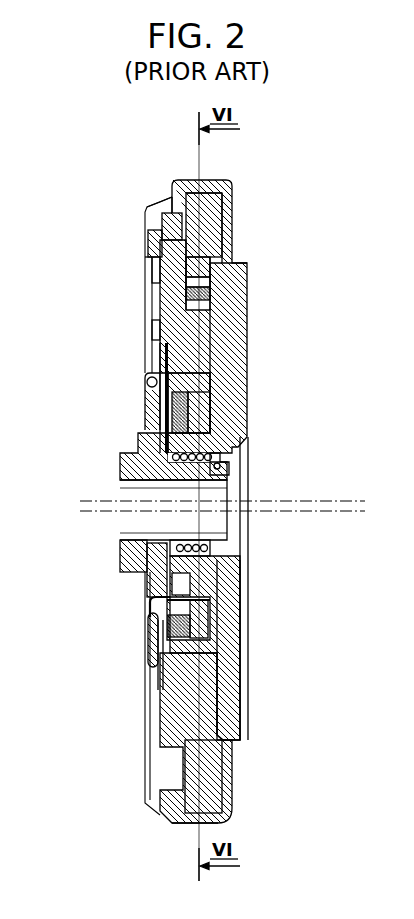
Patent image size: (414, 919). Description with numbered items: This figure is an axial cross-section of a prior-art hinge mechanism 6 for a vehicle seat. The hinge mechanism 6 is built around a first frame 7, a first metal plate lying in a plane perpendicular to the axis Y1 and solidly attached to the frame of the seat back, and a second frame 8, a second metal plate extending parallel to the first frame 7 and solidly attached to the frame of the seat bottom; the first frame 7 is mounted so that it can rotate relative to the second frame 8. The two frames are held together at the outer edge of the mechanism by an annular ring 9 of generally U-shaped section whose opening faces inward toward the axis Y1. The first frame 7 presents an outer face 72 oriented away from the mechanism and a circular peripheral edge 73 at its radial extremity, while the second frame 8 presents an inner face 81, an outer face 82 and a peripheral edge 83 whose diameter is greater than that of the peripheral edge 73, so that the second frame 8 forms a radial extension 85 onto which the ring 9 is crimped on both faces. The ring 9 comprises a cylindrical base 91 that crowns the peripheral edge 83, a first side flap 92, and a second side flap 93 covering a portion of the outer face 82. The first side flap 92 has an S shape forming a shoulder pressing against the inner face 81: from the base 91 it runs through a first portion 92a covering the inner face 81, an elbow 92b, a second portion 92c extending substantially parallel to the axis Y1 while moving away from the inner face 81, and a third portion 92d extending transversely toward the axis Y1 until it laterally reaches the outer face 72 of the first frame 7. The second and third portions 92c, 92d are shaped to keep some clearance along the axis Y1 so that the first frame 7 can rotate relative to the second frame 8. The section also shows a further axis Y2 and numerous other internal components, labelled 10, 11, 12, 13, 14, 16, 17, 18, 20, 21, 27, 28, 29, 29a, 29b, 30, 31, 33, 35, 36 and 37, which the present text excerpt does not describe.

The hinge mechanism 6 is at (305, 259).
The first frame 7 is at (180, 713).
The second frame 8 is at (228, 648).
The ring 9 is at (180, 823).
The gap 10 is at (211, 276).
The hub 11 is at (118, 562).
The flange 12 is at (178, 468).
The bore 13 is at (124, 537).
The bracket 14 is at (150, 405).
The lower bearing balls 16 is at (205, 545).
The body 17 is at (243, 577).
The upper bearing balls 18 is at (210, 459).
The retainer 20 is at (160, 601).
The spacer 21 is at (150, 578).
The base member 27 is at (190, 307).
The washer 28 is at (200, 293).
The damping member 29 is at (195, 380).
The damping member first portion 29a is at (180, 405).
The damping member second portion 29b is at (207, 417).
The spring 30 is at (190, 655).
The plate 31 is at (217, 673).
The seal 33 is at (226, 473).
The cover 35 is at (150, 652).
The bearing 36 is at (182, 603).
The bearing race 37 is at (192, 612).
The outer face 72 is at (150, 290).
The peripheral edge 73 is at (152, 237).
The inner face 81 is at (152, 220).
The outer face 82 is at (219, 260).
The peripheral edge 83 is at (193, 190).
The extension 85 is at (227, 193).
The cylindrical base 91 is at (208, 218).
The first side flap 92 is at (141, 210).
The first portion 92a is at (170, 194).
The elbow 92b is at (165, 193).
The second portion 92c is at (157, 205).
The third portion 92d is at (150, 254).
The second side flap 93 is at (224, 234).
The axis Y1 is at (337, 512).
The second axis Y2 is at (338, 500).